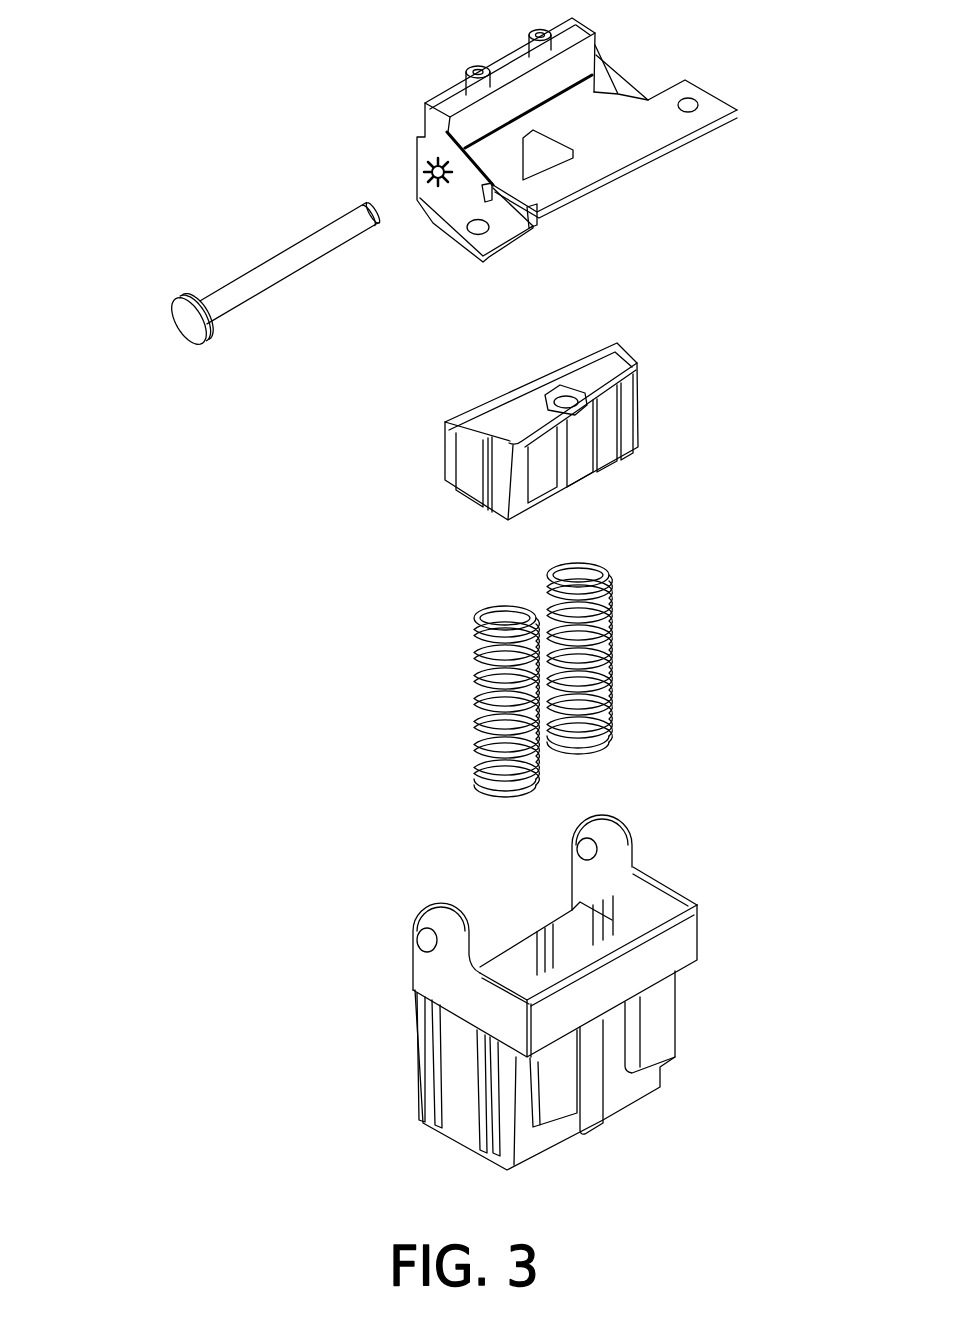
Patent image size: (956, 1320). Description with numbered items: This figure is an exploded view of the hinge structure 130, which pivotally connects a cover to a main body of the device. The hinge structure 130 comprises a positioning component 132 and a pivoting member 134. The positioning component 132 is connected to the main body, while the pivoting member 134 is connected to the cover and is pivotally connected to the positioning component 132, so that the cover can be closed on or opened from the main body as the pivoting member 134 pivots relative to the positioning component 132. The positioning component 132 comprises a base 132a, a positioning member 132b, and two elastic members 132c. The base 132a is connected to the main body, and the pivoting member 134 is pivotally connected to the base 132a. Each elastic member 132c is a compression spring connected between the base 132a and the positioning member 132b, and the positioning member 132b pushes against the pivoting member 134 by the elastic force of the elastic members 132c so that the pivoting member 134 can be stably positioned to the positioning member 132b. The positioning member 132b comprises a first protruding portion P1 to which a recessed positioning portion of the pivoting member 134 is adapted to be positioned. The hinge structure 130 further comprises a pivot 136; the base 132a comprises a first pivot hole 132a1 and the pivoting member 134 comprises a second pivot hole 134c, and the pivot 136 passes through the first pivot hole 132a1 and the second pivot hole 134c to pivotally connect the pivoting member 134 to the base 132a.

The hinge structure 130 is at (800, 1180).
The positioning component 132 is at (190, 505).
The base 132a is at (430, 967).
The first pivot hole 132a1 is at (582, 848).
The positioning member 132b is at (467, 463).
The elastic member 132c is at (473, 647).
The pivoting member 134 is at (658, 155).
The second pivot hole 134c is at (430, 172).
The pivot 136 is at (187, 327).
The first protruding portion P1 is at (583, 366).